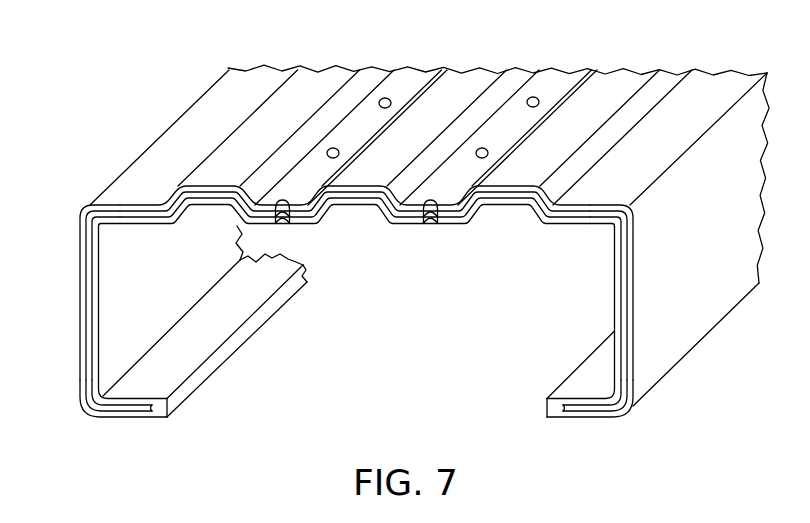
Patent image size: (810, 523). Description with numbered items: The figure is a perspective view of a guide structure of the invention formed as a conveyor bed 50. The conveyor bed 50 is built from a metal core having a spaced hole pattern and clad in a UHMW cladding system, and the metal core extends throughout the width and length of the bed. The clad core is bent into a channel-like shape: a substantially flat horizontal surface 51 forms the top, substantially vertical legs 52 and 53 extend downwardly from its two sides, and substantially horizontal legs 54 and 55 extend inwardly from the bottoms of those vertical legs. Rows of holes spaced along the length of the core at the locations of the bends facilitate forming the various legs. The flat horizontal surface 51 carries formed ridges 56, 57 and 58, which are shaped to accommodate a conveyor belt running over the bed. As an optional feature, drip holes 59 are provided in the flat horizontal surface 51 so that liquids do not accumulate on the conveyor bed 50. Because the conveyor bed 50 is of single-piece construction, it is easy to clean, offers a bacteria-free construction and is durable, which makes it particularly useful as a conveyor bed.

The conveyor bed 50 is at (122, 167).
The flat horizontal surface 51 is at (253, 75).
The vertical leg 52 is at (80, 350).
The vertical leg 53 is at (720, 257).
The horizontal leg 54 is at (237, 308).
The horizontal leg 55 is at (583, 371).
The formed ridge 56 is at (329, 78).
The formed ridge 57 is at (471, 75).
The formed ridge 58 is at (630, 75).
The drip hole 59 is at (533, 97).